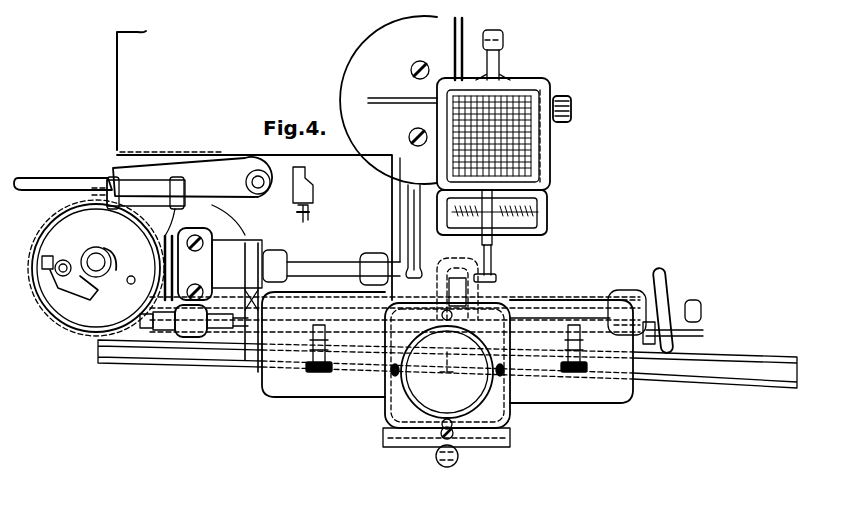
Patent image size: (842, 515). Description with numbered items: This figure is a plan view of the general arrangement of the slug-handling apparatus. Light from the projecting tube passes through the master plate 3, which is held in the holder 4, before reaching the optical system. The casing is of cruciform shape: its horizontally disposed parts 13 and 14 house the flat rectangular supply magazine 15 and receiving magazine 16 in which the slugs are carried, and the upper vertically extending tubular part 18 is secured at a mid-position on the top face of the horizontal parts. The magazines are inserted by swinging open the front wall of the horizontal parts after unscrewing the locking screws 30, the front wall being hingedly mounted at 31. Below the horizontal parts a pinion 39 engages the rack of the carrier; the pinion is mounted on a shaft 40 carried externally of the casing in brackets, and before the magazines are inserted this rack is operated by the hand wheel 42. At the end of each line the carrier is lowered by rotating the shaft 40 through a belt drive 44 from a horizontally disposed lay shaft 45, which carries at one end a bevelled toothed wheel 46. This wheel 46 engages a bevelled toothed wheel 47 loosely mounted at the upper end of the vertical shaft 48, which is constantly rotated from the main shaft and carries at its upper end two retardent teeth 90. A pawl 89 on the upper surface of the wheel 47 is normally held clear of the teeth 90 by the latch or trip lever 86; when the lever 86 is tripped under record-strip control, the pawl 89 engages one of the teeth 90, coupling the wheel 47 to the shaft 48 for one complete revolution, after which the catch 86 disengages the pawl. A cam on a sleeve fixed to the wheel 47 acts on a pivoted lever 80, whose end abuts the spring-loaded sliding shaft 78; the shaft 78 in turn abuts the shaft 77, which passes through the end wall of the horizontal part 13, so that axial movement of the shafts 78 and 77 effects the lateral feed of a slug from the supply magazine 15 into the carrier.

The master plate 3 is at (523, 138).
The holder 4 is at (518, 165).
The horizontally disposed part of casing 13 is at (342, 375).
The horizontally disposed part of casing 14 is at (578, 395).
The supply magazine 15 is at (217, 358).
The receiving magazine 16 is at (740, 372).
The upper vertically extending tubular part 18 is at (447, 366).
The locking screw 30 is at (318, 365).
The hinge of front wall 31 is at (392, 436).
The pinion 39 is at (490, 275).
The shaft 40 is at (555, 300).
The hand wheel 42 is at (668, 333).
The belt drive 44 is at (227, 318).
The lay shaft 45 is at (313, 270).
The bevelled toothed wheel 46 is at (180, 243).
The bevelled toothed wheel 47 is at (83, 330).
The vertical shaft 48 is at (63, 277).
The shaft 77 is at (258, 315).
The shaft 78 is at (238, 322).
The pivoted lever 80 is at (145, 320).
The latch or trip lever 86 is at (78, 186).
The pawl 89 is at (70, 300).
The retardent teeth 90 is at (108, 250).